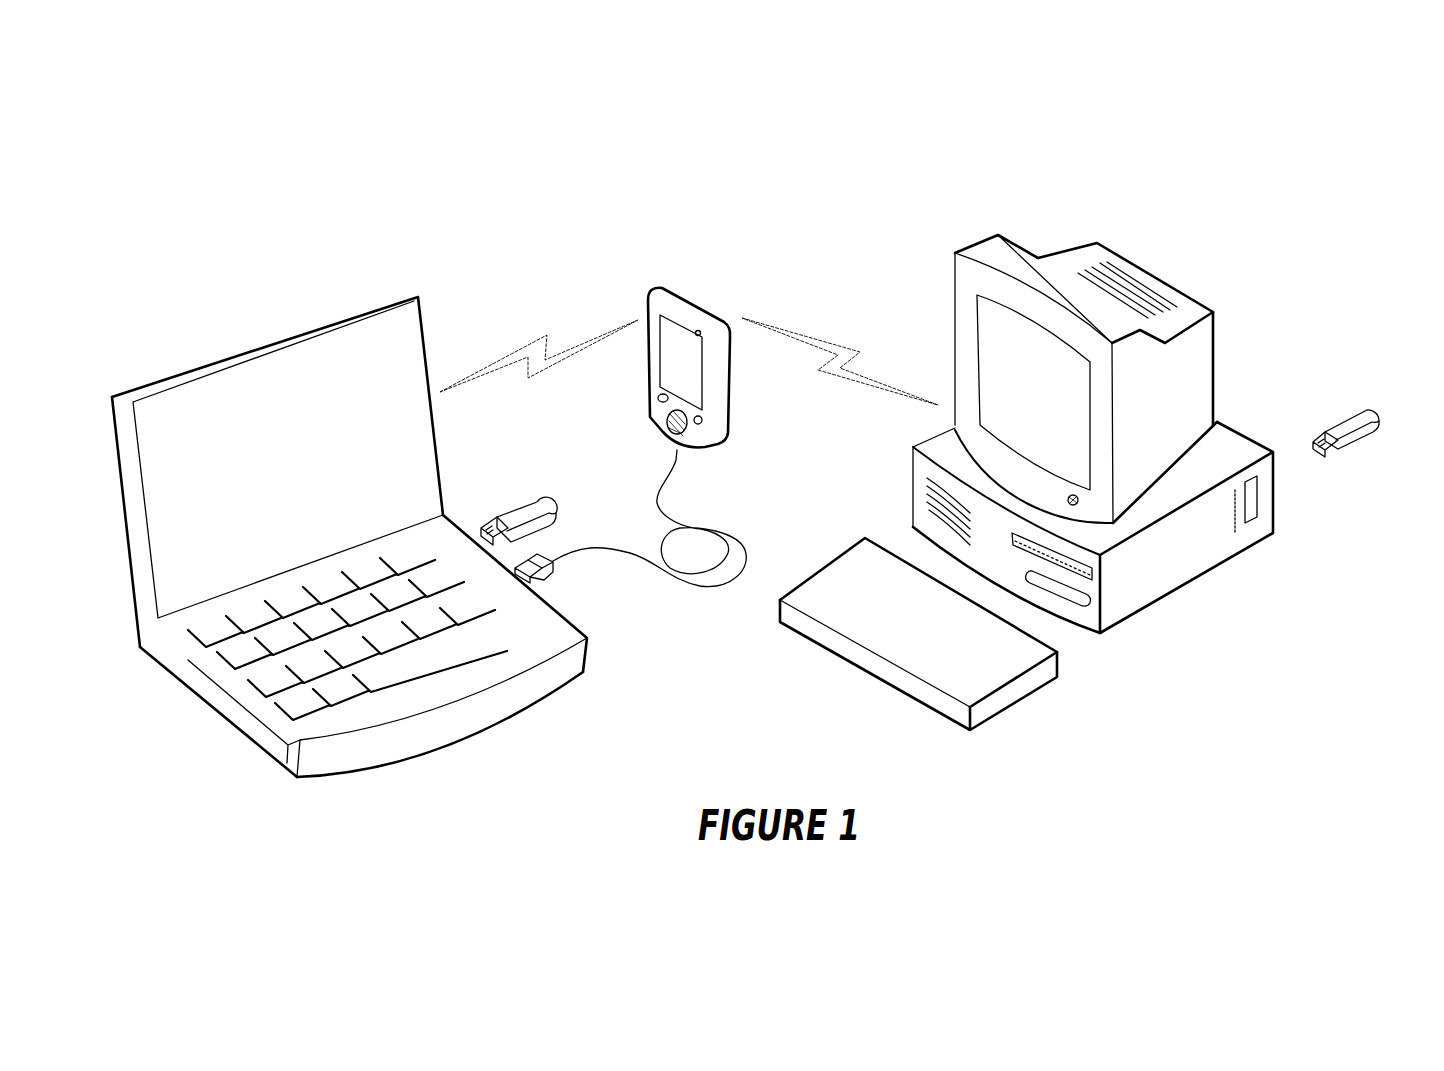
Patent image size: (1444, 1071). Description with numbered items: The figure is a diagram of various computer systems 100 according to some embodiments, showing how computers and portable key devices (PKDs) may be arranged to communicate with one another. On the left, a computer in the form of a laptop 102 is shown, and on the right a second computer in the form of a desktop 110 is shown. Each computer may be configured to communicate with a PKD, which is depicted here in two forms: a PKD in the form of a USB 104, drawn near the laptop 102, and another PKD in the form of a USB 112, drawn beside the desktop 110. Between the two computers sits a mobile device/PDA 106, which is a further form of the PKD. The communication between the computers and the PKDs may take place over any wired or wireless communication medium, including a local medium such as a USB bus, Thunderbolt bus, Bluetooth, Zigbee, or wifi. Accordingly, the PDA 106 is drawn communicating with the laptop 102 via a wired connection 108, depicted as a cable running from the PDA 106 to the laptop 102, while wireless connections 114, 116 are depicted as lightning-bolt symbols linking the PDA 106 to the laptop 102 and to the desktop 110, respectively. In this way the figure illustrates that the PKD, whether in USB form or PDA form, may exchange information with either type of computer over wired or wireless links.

The system 100 is at (690, 88).
The laptop 102 is at (418, 297).
The USB 104 is at (528, 502).
The mobile device/PDA 106 is at (697, 303).
The wired connection 108 is at (727, 535).
The desktop 110 is at (1000, 237).
The USB 112 is at (1362, 408).
The wireless connection 114 is at (548, 335).
The wireless connection 116 is at (822, 342).